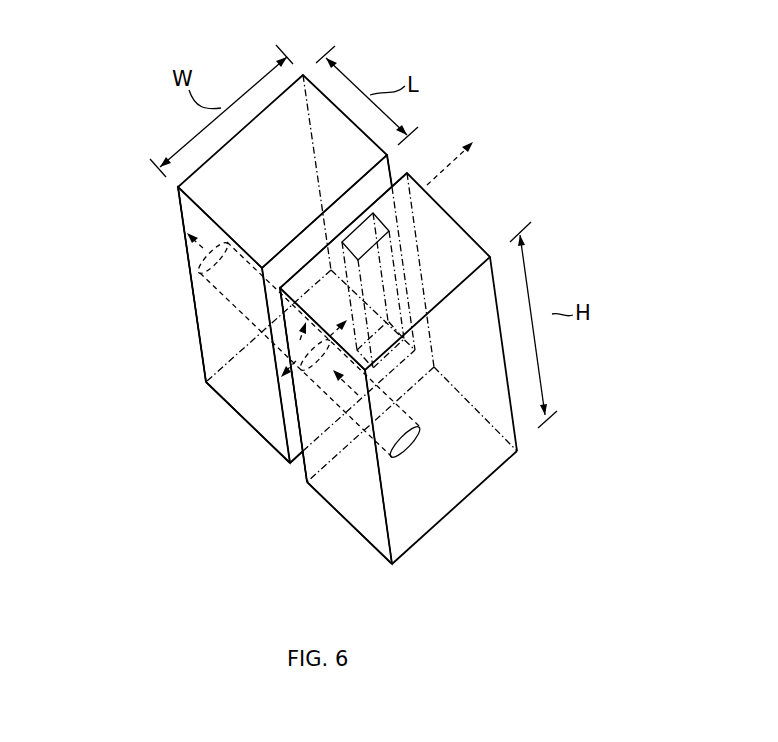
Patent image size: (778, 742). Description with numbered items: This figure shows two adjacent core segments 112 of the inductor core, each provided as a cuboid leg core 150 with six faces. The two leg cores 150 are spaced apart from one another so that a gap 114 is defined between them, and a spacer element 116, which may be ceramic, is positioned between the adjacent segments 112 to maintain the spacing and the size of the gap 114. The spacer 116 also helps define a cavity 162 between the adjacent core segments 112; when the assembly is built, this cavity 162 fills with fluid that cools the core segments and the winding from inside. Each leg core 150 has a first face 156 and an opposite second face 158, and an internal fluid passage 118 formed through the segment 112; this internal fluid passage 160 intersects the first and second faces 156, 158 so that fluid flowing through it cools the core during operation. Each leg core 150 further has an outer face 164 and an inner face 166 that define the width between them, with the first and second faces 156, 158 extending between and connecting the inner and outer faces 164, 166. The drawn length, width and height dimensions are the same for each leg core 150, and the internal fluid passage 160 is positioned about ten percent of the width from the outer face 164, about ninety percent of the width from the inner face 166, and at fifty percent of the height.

The core segment 112 is at (242, 383).
The gap 114 is at (290, 476).
The spacer element 116 is at (390, 231).
The internal fluid passage 118 is at (235, 292).
The leg core 150 is at (292, 125).
The first face 156 is at (297, 461).
The second face 158 is at (170, 235).
The internal fluid passage 160 is at (130, 285).
The cavity 162 is at (287, 455).
The outer face 164 is at (253, 400).
The inner face 166 is at (440, 185).